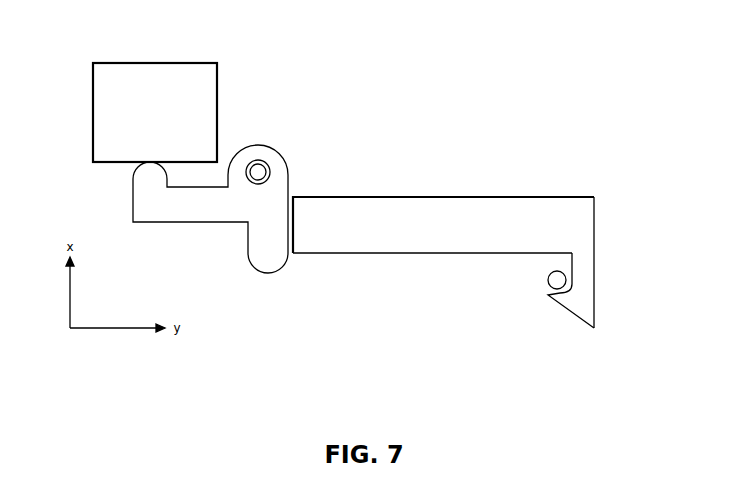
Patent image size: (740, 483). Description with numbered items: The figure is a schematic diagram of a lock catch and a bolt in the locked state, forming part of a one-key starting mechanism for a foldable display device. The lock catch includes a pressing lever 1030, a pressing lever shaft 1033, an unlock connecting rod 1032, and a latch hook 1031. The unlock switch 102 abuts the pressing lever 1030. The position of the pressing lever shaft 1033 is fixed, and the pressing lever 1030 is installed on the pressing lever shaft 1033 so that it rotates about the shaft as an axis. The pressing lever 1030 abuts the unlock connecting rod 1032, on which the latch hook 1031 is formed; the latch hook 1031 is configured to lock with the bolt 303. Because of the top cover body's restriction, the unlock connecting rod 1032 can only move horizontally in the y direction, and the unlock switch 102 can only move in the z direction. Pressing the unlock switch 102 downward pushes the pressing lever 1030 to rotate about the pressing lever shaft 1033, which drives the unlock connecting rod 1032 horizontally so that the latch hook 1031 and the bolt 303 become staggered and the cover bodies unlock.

The unlock switch 102 is at (152, 78).
The pressing lever 1030 is at (152, 207).
The latch hook 1031 is at (603, 266).
The unlock connecting rod 1032 is at (401, 215).
The pressing lever shaft 1033 is at (260, 161).
The bolt 303 is at (563, 281).